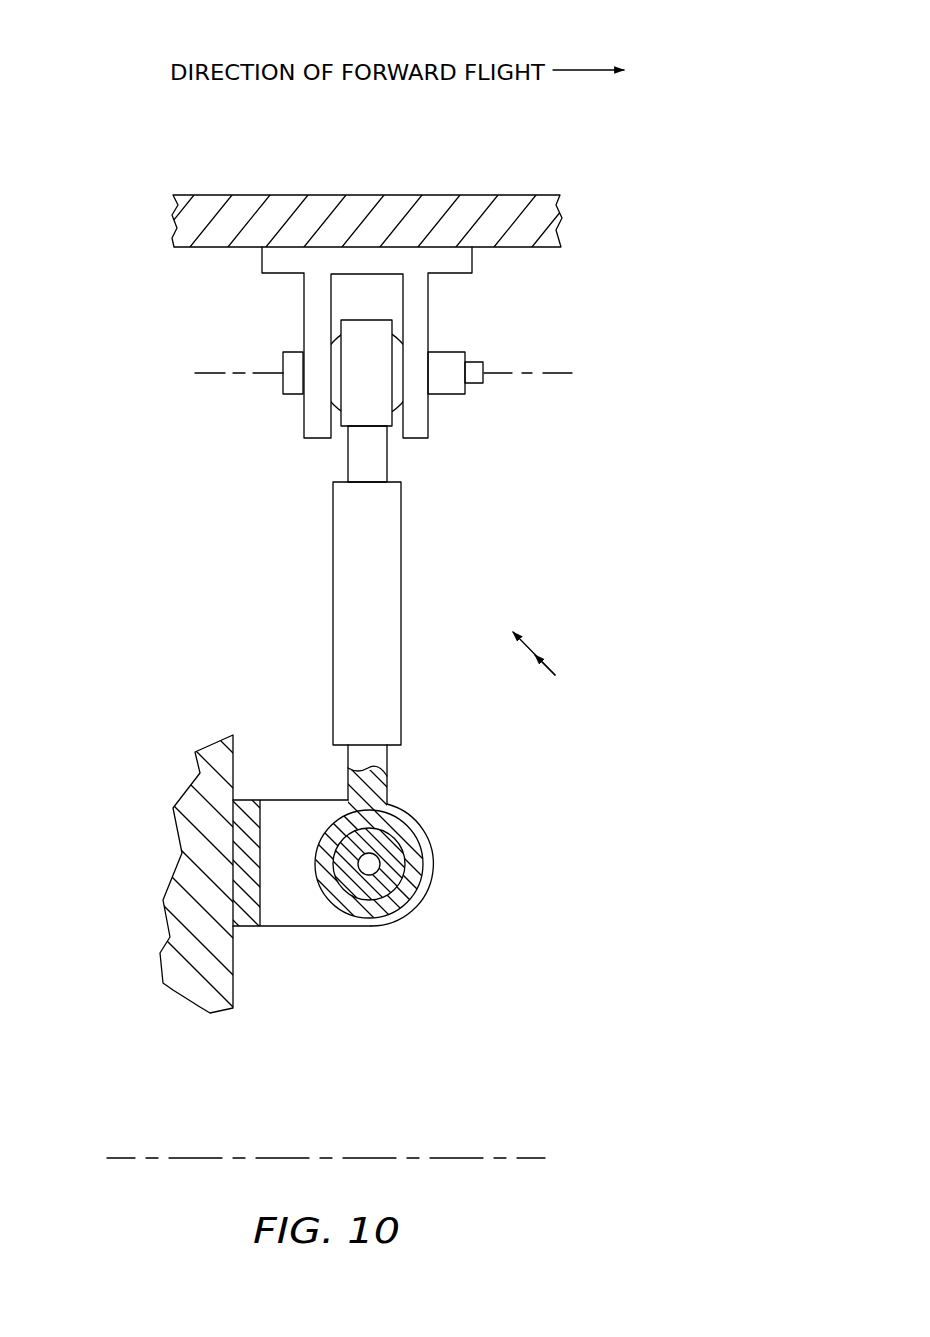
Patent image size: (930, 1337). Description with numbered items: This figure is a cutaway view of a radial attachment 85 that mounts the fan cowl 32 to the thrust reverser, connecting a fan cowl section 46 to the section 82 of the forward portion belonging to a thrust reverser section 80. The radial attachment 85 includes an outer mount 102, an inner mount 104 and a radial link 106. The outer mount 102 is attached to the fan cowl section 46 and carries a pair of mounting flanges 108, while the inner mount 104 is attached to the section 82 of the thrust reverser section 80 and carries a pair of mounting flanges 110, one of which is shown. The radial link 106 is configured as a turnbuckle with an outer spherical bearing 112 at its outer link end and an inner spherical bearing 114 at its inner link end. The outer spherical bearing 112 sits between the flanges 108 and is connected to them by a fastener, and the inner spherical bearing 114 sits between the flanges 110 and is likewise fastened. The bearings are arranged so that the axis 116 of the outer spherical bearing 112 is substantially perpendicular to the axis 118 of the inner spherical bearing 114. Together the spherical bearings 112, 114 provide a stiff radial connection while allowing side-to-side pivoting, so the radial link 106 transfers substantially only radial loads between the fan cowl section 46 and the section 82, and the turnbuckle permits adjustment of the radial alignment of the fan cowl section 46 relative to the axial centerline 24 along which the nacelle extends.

The fan cowl 32 is at (363, 171).
The fan cowl section 46 is at (510, 192).
The outer mount 102 is at (300, 292).
The outer spherical bearing 112 is at (396, 332).
The mounting flanges 108 is at (304, 426).
The axis of the outer spherical bearing 116 is at (554, 375).
The radial link 106 is at (407, 580).
The radial attachment 85 is at (549, 666).
The inner spherical bearing 114 is at (425, 853).
The axis of the inner spherical bearing 118 is at (368, 856).
The mounting flanges 110 is at (412, 907).
The inner mount 104 is at (308, 934).
The thrust reverser section 80 is at (124, 825).
The section of the forward portion 82 is at (158, 983).
The axial centerline 24 is at (535, 1155).